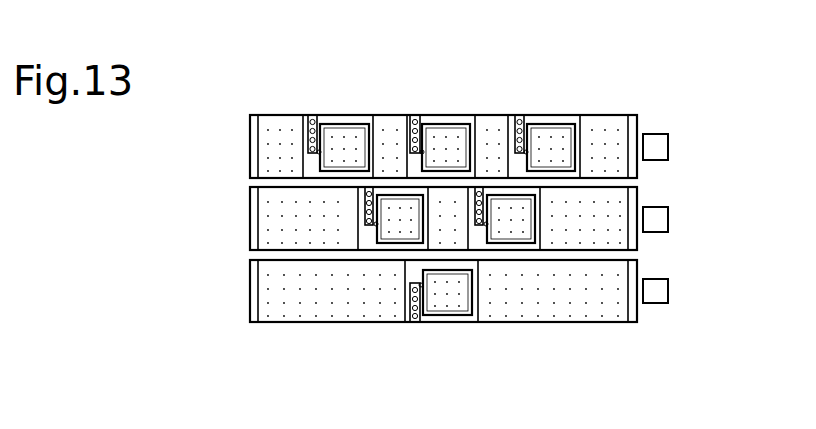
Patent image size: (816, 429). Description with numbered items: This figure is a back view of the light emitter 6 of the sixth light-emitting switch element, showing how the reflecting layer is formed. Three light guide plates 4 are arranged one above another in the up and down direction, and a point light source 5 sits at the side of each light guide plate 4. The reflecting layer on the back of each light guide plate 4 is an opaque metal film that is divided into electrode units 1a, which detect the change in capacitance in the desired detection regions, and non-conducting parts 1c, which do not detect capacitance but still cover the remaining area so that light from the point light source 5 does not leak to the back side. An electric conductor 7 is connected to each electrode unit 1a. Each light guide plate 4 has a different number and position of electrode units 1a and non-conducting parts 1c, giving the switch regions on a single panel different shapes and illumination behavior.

The electrode unit 1a is at (343, 135).
The non-conducting part 1c is at (275, 143).
The light guide plate 4 is at (252, 168).
The point light source 5 is at (666, 148).
The light emitter 6 is at (688, 93).
The electric conductor 7 is at (311, 120).